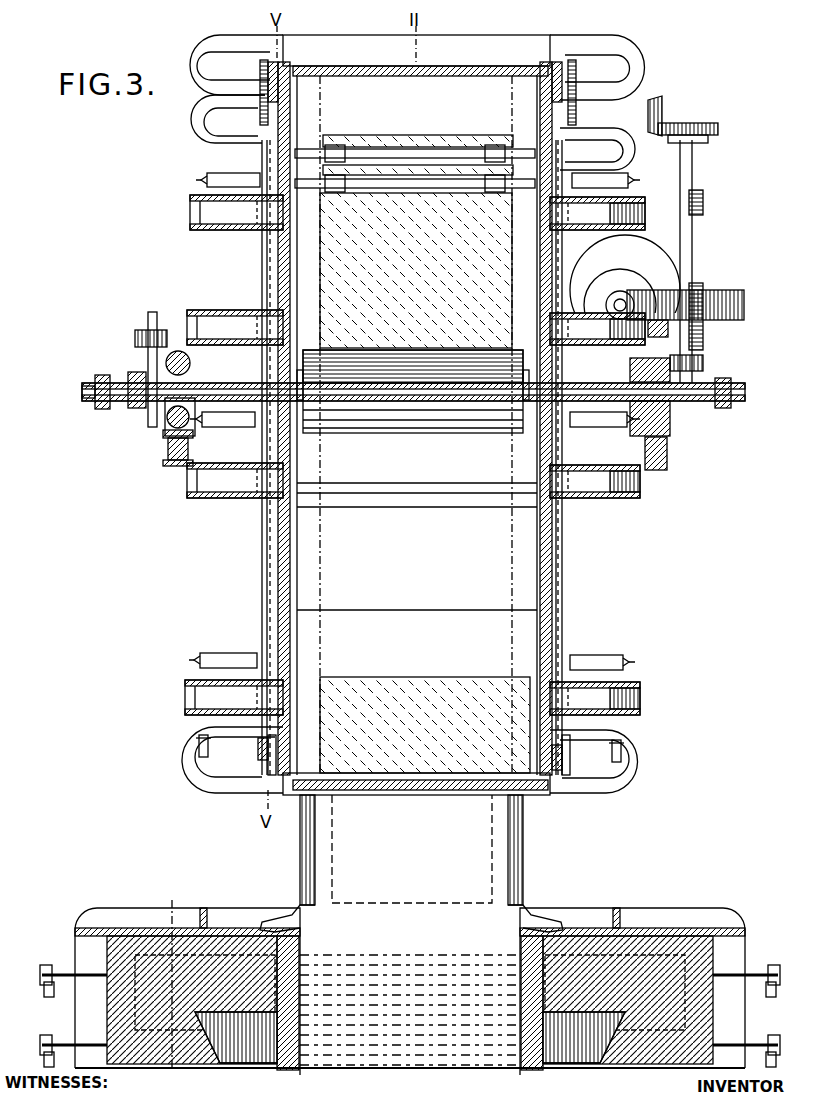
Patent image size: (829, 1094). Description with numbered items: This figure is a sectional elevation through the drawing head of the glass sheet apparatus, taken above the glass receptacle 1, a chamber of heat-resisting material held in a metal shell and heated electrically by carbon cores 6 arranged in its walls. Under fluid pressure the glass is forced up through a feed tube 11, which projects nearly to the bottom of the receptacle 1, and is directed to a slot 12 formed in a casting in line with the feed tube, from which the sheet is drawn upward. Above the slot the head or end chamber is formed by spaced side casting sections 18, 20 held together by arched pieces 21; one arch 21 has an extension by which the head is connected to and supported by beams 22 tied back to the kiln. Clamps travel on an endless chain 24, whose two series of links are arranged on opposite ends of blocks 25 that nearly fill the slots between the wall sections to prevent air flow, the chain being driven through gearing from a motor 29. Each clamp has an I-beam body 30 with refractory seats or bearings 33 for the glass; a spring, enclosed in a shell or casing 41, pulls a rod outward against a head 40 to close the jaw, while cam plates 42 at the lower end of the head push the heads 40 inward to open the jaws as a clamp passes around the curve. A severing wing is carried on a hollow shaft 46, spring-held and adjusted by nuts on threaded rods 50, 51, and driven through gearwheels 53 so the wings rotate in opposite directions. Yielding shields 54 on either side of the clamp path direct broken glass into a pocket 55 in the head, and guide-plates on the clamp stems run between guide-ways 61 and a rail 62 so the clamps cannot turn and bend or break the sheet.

The receptacle 1 is at (561, 1062).
The cores 6 is at (410, 977).
The feed tube 11 is at (307, 1062).
The slot 12 is at (300, 903).
The side casting section 18 is at (556, 772).
The side casting section 20 is at (262, 250).
The arched pieces 21 is at (205, 125).
The beams 22 is at (166, 453).
The endless chain 24 is at (265, 580).
The blocks 25 is at (573, 776).
The motor 29 is at (655, 246).
The base or body portion 30 is at (378, 190).
The seats or bearings 33 is at (336, 147).
The head 40 is at (634, 181).
The shell or casing 41 is at (214, 179).
The cam plates 42 is at (200, 722).
The shaft 46 is at (406, 400).
The threaded rod 50 is at (190, 366).
The threaded rod 51 is at (197, 426).
The gearwheels 53 is at (146, 318).
The shields 54 is at (447, 470).
The pocket 55 is at (428, 622).
The guide-ways 61 is at (254, 781).
The rail 62 is at (260, 741).